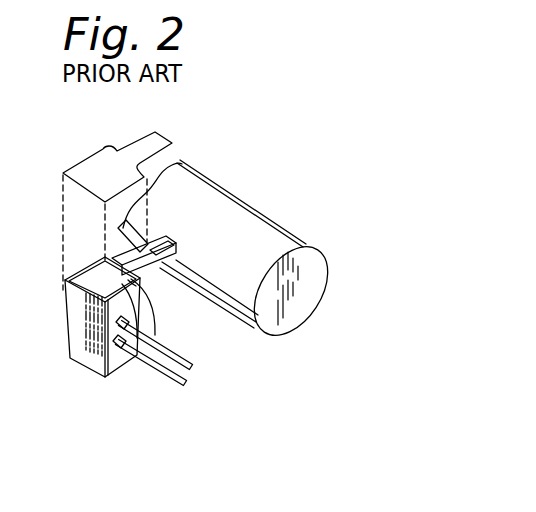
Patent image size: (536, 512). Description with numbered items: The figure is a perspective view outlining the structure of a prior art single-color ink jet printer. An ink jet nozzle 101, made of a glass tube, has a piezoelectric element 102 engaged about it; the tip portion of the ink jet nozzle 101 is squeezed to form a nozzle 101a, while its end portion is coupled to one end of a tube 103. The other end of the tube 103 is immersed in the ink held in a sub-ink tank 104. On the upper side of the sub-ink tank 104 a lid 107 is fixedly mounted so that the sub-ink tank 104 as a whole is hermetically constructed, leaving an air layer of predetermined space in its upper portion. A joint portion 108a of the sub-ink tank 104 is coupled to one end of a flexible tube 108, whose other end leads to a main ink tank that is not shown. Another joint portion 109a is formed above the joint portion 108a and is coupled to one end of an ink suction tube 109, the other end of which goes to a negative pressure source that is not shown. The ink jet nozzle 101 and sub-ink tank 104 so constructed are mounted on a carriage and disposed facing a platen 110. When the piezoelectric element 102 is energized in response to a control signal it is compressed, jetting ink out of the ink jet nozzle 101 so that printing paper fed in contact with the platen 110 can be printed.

The ink jet nozzle 101 is at (155, 266).
The nozzle 101a is at (168, 243).
The piezoelectric element 102 is at (180, 272).
The tube 103 is at (130, 287).
The sub-ink tank 104 is at (98, 374).
The lid 107 is at (92, 159).
The flexible tube 108 is at (148, 366).
The joint portion 108a is at (128, 372).
The ink suction tube 109 is at (190, 364).
The joint portion 109a is at (130, 321).
The platen 110 is at (280, 230).